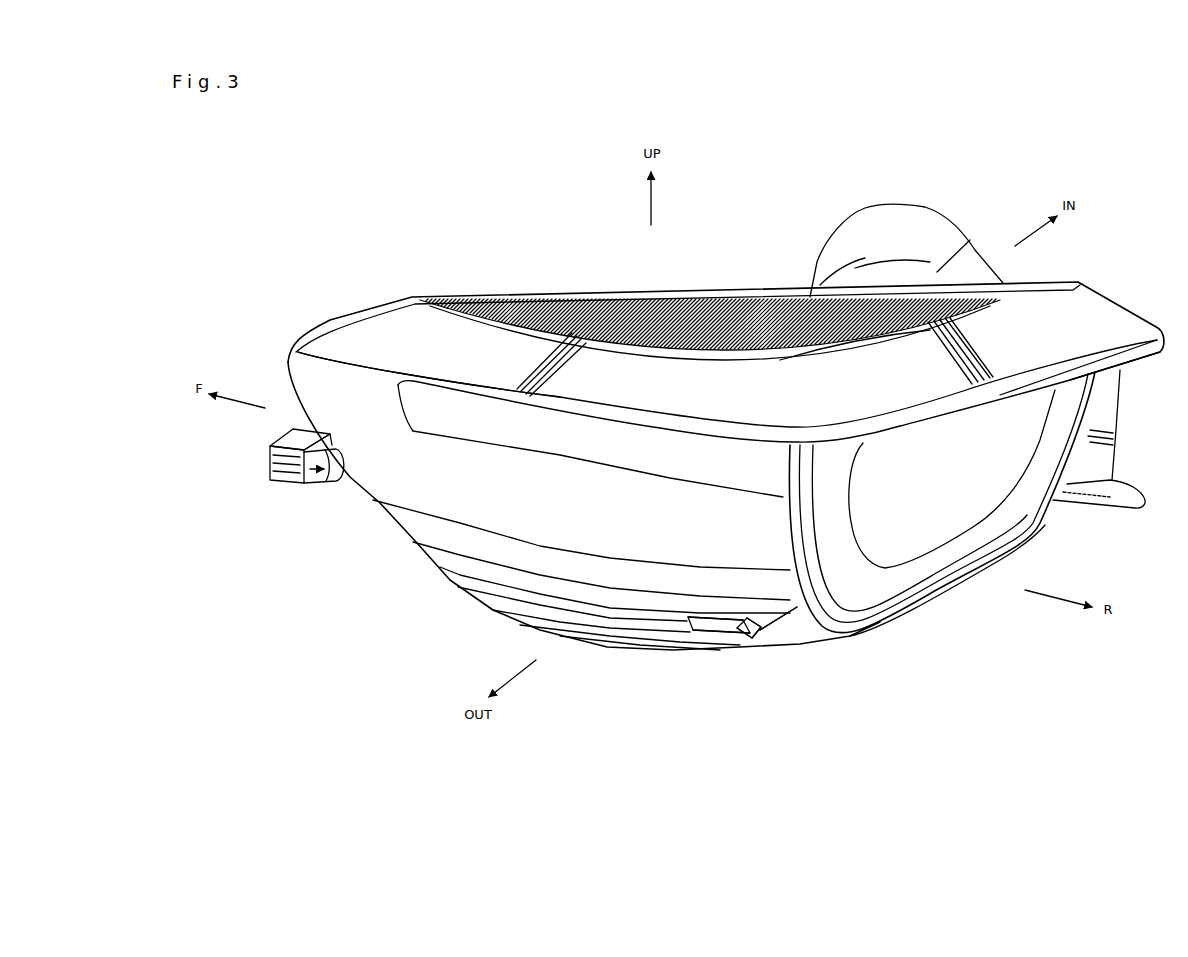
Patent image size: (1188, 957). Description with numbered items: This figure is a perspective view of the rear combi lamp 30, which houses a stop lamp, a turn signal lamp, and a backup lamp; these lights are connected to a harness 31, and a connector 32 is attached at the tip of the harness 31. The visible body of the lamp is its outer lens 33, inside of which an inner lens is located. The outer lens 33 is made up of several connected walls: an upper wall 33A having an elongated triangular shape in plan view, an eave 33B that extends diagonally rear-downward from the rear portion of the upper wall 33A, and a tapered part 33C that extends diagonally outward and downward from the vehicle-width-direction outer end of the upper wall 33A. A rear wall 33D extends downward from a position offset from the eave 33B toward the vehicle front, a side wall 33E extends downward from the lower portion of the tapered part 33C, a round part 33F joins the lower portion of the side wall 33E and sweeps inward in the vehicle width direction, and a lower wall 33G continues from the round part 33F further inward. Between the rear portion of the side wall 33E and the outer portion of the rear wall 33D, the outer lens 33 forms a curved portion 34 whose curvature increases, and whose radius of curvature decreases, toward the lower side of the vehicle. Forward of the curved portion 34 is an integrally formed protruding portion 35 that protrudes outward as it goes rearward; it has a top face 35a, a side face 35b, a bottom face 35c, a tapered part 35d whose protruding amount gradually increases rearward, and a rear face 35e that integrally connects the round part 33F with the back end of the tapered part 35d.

The rear combi lamp 30 is at (510, 241).
The harness 31 is at (340, 484).
The connector 32 is at (292, 482).
The outer lens 33 is at (556, 298).
The upper wall 33A is at (726, 313).
The eave 33B is at (1098, 315).
The tapered part 33C is at (483, 347).
The rear wall 33D is at (931, 486).
The side wall 33E is at (484, 499).
The round part 33F is at (603, 627).
The lower wall 33G is at (940, 607).
The curved portion 34 is at (839, 601).
The protruding portion 35 is at (704, 612).
The top face 35a is at (725, 616).
The side face 35b is at (707, 643).
The bottom face 35c is at (770, 652).
The tapered part 35d is at (730, 633).
The rear face 35e is at (813, 618).